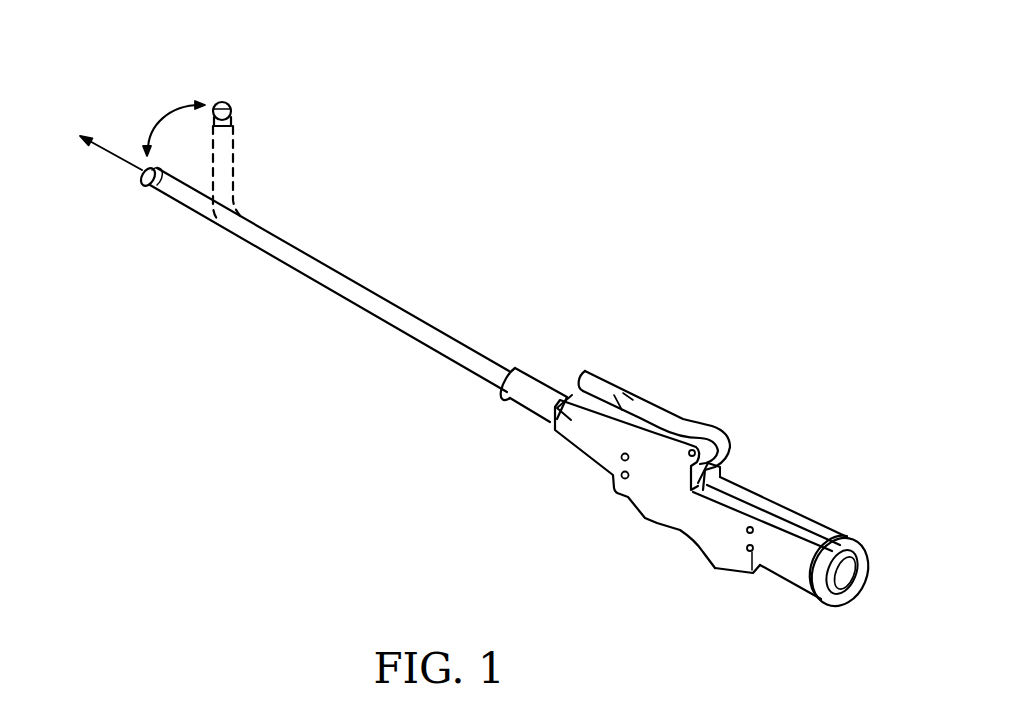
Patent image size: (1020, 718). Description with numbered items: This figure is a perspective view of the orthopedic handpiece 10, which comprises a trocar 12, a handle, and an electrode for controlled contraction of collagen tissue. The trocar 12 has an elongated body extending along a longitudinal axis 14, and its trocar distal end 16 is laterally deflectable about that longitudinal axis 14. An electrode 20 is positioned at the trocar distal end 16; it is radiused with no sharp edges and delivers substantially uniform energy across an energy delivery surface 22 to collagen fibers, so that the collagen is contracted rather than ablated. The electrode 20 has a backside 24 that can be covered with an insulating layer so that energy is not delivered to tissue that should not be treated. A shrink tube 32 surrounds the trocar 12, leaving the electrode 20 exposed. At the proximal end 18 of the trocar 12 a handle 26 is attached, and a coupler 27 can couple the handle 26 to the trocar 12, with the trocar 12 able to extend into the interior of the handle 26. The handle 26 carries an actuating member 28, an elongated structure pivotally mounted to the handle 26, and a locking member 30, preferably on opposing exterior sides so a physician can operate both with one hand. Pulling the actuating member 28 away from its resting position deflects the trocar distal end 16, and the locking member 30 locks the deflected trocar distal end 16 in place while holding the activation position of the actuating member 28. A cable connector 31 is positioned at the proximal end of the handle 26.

The handpiece 10 is at (508, 256).
The trocar 12 is at (368, 303).
The longitudinal axis 14 is at (94, 143).
The trocar distal end 16 is at (167, 190).
The proximal end 18 is at (493, 366).
The electrode 20 is at (222, 100).
The energy delivery surface 22 is at (243, 113).
The backside 24 is at (214, 116).
The handle 26 is at (705, 518).
The coupler 27 is at (538, 382).
The actuating member 28 is at (665, 420).
The locking member 30 is at (720, 568).
The cable connector 31 is at (860, 549).
The shrink tube 32 is at (348, 282).